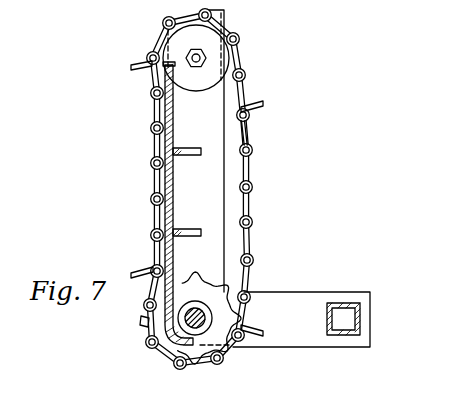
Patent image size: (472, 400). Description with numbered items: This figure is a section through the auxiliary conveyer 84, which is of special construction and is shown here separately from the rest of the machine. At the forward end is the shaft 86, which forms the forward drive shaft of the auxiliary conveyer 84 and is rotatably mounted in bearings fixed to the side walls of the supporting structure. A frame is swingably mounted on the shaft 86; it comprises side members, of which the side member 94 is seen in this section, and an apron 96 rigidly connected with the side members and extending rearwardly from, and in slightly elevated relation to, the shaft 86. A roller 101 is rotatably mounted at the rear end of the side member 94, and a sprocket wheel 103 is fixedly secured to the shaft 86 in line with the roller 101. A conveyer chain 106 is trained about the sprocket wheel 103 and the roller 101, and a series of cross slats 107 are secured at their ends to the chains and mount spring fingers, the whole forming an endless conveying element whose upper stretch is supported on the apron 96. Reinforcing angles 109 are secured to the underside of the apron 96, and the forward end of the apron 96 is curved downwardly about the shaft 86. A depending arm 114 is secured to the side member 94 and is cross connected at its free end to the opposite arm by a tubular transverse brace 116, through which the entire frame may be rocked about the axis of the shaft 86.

The auxiliary conveyer 84 is at (185, 203).
The shaft 86 is at (191, 308).
The side member 94 is at (218, 172).
The apron 96 is at (162, 185).
The roller 101 is at (233, 62).
The sprocket wheel 103 is at (144, 323).
The conveyer chain 106 is at (250, 129).
The cross slats 107 is at (262, 331).
The reinforcing angles 109 is at (181, 238).
The depending arm 114 is at (324, 294).
The tubular transverse brace 116 is at (361, 320).